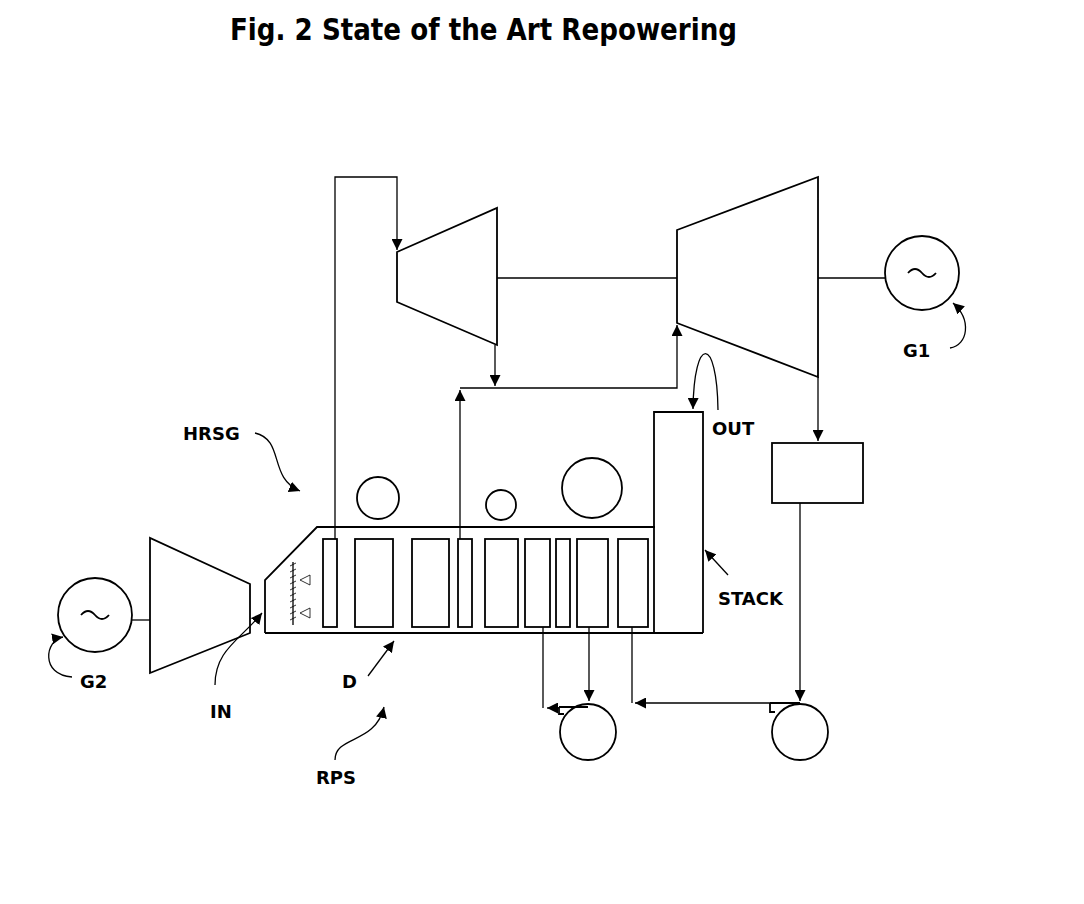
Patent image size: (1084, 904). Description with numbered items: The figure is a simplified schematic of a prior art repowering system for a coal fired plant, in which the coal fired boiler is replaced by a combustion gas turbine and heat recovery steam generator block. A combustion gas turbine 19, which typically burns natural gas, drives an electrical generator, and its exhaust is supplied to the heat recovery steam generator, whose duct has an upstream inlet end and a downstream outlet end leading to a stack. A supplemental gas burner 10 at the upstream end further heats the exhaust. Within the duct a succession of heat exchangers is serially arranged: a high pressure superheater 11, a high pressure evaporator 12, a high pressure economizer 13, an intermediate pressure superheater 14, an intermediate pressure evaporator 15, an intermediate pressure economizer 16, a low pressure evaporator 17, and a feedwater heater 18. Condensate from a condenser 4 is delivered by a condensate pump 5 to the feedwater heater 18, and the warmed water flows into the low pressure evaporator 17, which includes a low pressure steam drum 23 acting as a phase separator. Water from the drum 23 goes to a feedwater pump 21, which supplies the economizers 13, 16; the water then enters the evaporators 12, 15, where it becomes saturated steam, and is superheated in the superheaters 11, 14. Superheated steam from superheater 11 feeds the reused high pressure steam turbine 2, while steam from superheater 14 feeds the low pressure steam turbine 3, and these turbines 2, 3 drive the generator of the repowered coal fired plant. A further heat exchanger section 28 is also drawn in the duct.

The high pressure steam turbine 2 is at (447, 276).
The low pressure steam turbine 3 is at (747, 277).
The condenser 4 is at (817, 473).
The condensate pump 5 is at (799, 731).
The supplemental gas burner 10 is at (291, 583).
The high pressure superheater 11 is at (324, 634).
The high pressure evaporator 12 is at (374, 583).
The high pressure economizer 13 is at (430, 583).
The intermediate pressure superheater 14 is at (460, 634).
The intermediate pressure evaporator 15 is at (501, 583).
The intermediate pressure economizer 16 is at (537, 634).
The low pressure evaporator 17 is at (592, 583).
The feedwater heater 18 is at (651, 634).
The combustion gas turbine 19 is at (200, 605).
The feedwater pump 21 is at (587, 732).
The low pressure steam drum 23 is at (592, 488).
The heat exchanger section 28 is at (561, 534).